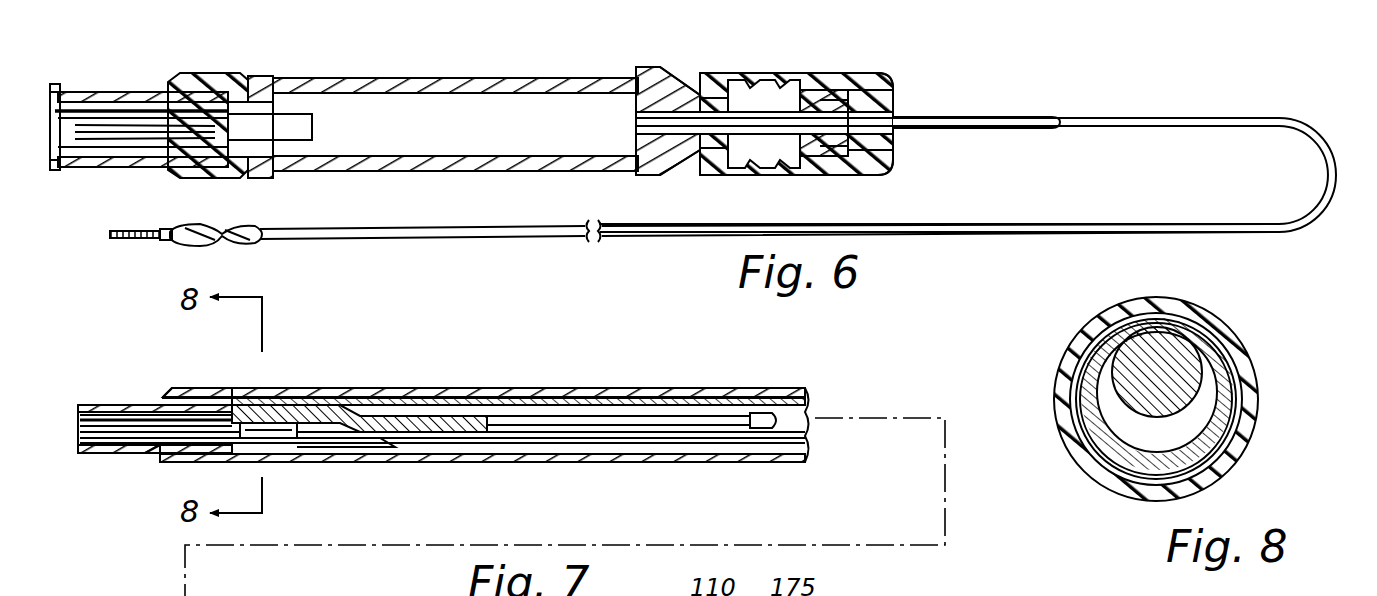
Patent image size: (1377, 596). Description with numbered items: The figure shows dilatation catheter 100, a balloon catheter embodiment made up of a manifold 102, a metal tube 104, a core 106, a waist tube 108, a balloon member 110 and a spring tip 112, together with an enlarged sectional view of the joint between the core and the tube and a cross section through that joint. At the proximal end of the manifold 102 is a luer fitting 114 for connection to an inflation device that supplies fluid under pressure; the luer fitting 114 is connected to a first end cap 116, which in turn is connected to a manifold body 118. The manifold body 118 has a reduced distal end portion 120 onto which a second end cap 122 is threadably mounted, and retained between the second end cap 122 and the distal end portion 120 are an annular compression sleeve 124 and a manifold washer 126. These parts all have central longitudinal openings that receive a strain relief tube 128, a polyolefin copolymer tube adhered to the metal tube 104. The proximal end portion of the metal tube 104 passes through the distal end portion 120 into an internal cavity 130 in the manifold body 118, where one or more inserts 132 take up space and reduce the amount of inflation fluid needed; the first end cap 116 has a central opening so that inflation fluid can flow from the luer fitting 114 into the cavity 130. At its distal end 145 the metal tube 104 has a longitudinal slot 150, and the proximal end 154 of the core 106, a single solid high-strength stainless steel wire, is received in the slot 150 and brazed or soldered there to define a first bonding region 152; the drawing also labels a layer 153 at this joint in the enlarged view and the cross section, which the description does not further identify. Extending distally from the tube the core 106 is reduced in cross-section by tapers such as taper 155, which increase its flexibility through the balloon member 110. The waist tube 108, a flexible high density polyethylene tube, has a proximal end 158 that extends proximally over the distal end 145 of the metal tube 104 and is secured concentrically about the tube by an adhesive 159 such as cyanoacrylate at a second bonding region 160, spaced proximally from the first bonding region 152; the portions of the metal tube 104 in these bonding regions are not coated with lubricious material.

In FIG. 6, the dilatation catheter 100 is at (1090, 92).
In FIG. 6, the manifold 102 is at (514, 73).
In FIG. 6, the metal tube 104 is at (1328, 122).
In FIG. 7, the metal tube 104 is at (95, 400).
In FIG. 8, the metal tube 104 is at (1095, 378).
In FIG. 7, the core 106 is at (688, 415).
In FIG. 8, the core 106 is at (1168, 402).
In FIG. 6, the waist tube 108 is at (398, 242).
In FIG. 7, the waist tube 108 is at (712, 386).
In FIG. 8, the waist tube 108 is at (1245, 332).
In FIG. 6, the balloon member 110 is at (222, 248).
In FIG. 6, the spring tip 112 is at (120, 244).
In FIG. 6, the luer fitting 114 is at (84, 95).
In FIG. 6, the first end cap 116 is at (228, 72).
In FIG. 6, the manifold body 118 is at (447, 75).
In FIG. 6, the distal end portion 120 is at (738, 88).
In FIG. 6, the second end cap 122 is at (790, 98).
In FIG. 6, the compression sleeve 124 is at (822, 100).
In FIG. 6, the manifold washer 126 is at (860, 88).
In FIG. 6, the strain relief tube 128 is at (958, 118).
In FIG. 6, the internal cavity 130 is at (560, 158).
In FIG. 6, the inserts 132 is at (388, 163).
In FIG. 7, the distal end 145 is at (305, 445).
In FIG. 8, the longitudinal slot 150 is at (1098, 325).
In FIG. 7, the first bonding region 152 is at (272, 385).
In FIG. 7, the inner layer 153 is at (282, 405).
In FIG. 8, the inner layer 153 is at (1175, 323).
In FIG. 7, the proximal end 154 is at (240, 455).
In FIG. 7, the taper 155 is at (768, 430).
In FIG. 7, the proximal end 158 is at (178, 388).
In FIG. 7, the adhesive 159 is at (152, 456).
In FIG. 7, the second bonding region 160 is at (165, 478).